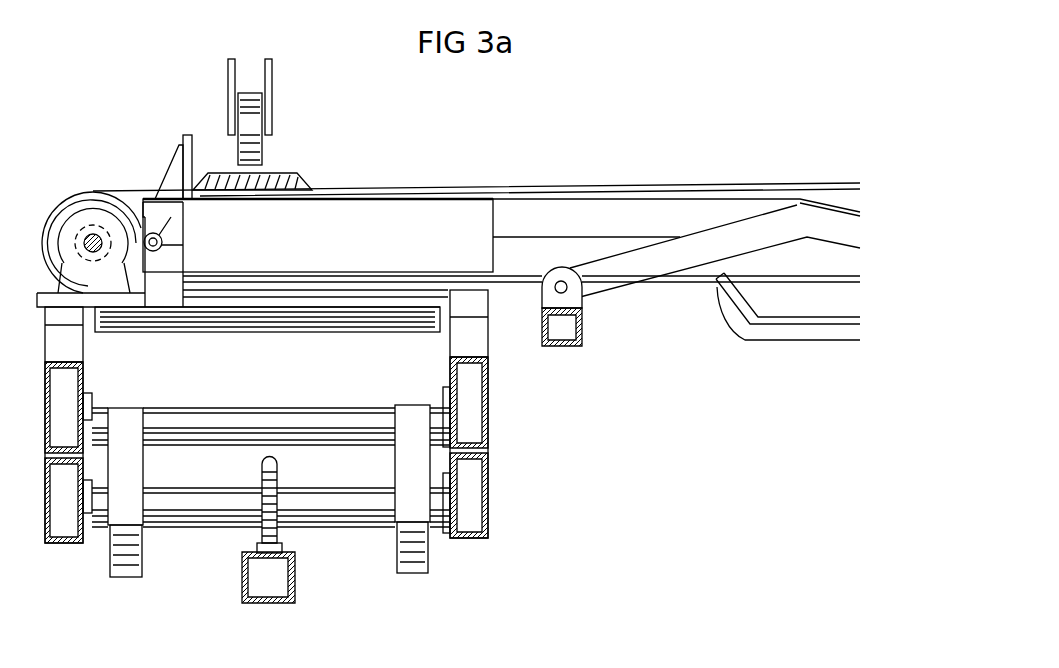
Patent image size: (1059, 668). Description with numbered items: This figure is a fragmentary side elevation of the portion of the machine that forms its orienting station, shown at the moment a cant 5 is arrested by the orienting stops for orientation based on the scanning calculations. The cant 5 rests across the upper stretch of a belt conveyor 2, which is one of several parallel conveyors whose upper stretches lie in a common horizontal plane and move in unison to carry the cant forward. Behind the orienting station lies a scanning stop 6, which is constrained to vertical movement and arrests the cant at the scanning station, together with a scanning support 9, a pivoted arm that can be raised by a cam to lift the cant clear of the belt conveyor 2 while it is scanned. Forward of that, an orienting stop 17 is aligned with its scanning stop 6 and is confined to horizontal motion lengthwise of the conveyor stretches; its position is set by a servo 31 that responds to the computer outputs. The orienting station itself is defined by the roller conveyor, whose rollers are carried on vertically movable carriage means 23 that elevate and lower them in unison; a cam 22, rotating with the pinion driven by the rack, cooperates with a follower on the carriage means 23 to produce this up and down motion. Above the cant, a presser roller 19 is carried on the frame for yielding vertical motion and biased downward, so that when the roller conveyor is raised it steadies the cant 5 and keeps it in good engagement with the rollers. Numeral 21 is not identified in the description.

The belt conveyor 2 is at (723, 188).
The cant 5 is at (293, 182).
The scanning stop 6 is at (778, 330).
The scanning support 9 is at (602, 275).
The orienting stop 17 is at (167, 187).
The presser roller 19 is at (250, 150).
The adjusting screw 21 is at (246, 540).
The cam 22 is at (127, 562).
The carriage means 23 is at (473, 410).
The servo 31 is at (355, 262).